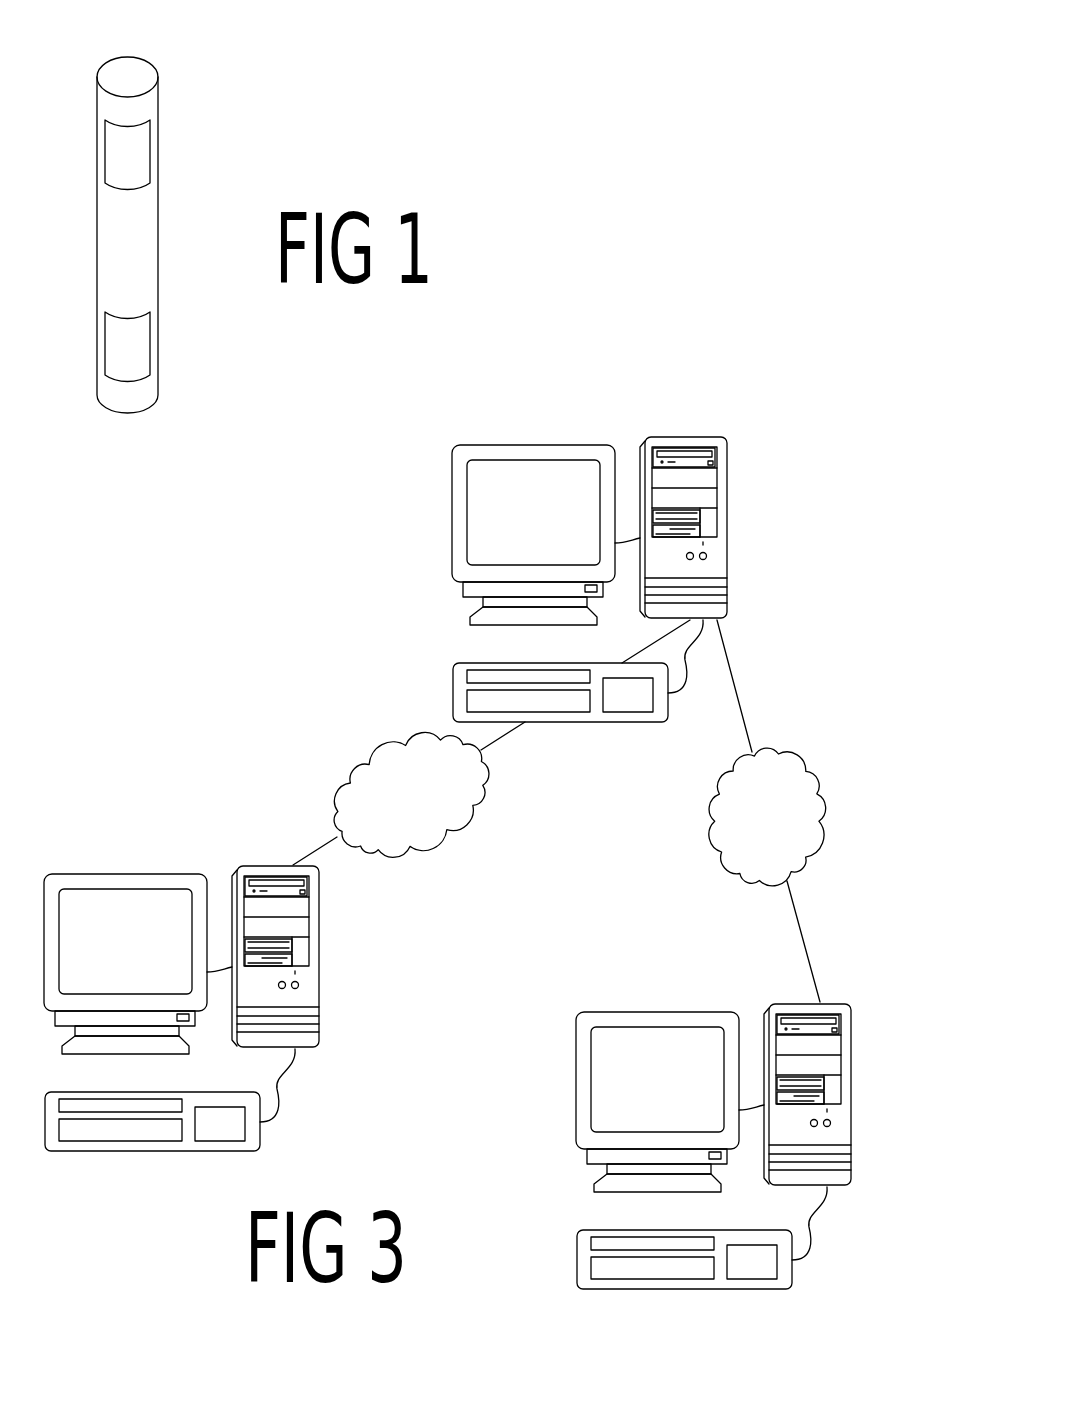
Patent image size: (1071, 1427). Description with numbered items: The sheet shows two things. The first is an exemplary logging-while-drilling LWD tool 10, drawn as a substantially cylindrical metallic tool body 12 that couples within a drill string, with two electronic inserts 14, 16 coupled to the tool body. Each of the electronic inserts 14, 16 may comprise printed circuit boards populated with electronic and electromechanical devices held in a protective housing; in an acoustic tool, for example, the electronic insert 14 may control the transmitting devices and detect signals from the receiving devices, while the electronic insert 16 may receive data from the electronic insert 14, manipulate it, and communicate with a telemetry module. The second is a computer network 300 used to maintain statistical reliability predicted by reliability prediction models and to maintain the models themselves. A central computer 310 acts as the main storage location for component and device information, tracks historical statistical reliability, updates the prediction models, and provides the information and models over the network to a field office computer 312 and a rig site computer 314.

In FIG. 1, the LWD tool 10 is at (157, 208).
In FIG. 1, the tool body 12 is at (150, 108).
In FIG. 1, the electronic insert 14 is at (127, 162).
In FIG. 1, the electronic insert 16 is at (142, 354).
In FIG. 3, the computer network 300 is at (447, 829).
In FIG. 3, the central computer 310 is at (703, 440).
In FIG. 3, the field office computer 312 is at (240, 870).
In FIG. 3, the rig site computer 314 is at (767, 1012).